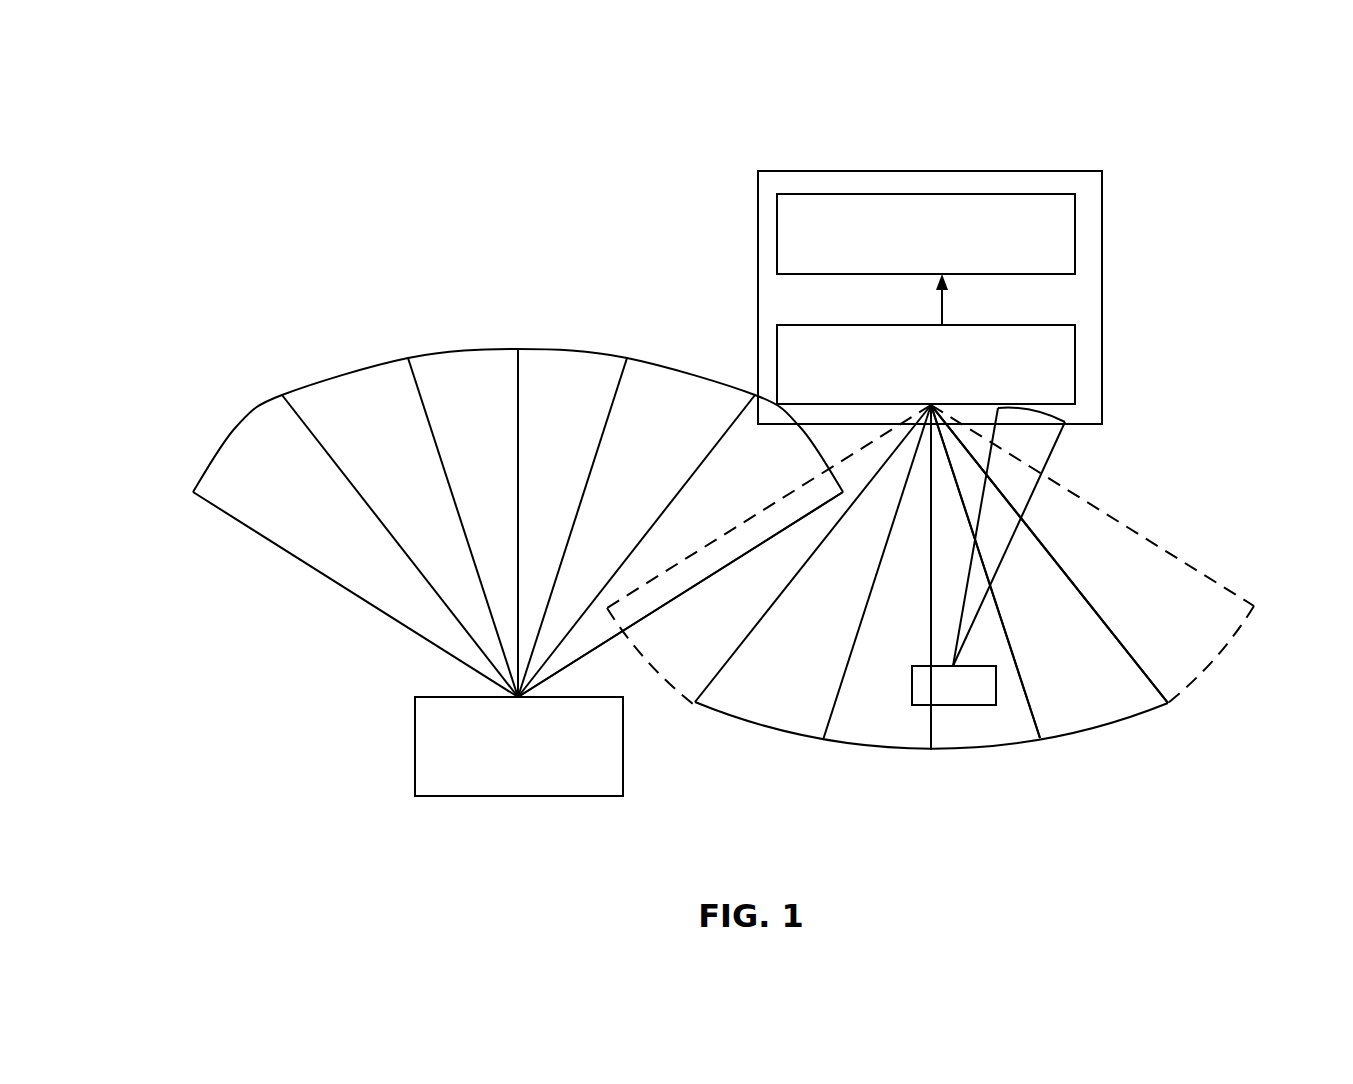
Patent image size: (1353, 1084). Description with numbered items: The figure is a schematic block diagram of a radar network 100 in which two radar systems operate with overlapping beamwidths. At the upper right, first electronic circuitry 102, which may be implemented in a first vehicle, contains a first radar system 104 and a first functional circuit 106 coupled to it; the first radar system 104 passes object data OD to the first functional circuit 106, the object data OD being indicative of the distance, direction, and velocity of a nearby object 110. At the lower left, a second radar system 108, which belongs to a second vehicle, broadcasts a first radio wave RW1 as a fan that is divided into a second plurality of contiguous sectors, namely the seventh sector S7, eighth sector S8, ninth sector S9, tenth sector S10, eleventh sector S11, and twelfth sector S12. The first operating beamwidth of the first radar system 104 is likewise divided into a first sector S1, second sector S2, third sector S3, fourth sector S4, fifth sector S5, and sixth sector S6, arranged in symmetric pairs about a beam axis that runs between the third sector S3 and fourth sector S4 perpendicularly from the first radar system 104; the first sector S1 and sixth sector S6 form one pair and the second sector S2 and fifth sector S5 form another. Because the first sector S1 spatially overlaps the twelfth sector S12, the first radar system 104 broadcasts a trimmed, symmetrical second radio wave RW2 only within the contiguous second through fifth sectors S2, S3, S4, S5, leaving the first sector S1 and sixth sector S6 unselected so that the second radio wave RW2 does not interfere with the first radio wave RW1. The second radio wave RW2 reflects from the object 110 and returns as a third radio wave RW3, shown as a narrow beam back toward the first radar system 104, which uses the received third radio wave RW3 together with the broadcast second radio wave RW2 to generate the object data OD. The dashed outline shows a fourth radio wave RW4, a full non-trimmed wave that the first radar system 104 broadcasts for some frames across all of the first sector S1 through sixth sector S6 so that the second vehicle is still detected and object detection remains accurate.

The radar network 100 is at (162, 125).
The first electronic circuitry 102 is at (1102, 297).
The first radar system 104 is at (926, 364).
The first functional circuit 106 is at (926, 234).
The second radar system 108 is at (519, 746).
The object 110 is at (950, 706).
The object data OD is at (922, 299).
The first radio wave RW1 is at (340, 585).
The second radio wave RW2 is at (1075, 737).
The third radio wave RW3 is at (1057, 452).
The fourth radio wave RW4 is at (1223, 667).
The first sector S1 is at (803, 572).
The second sector S2 is at (843, 577).
The third sector S3 is at (947, 571).
The fourth sector S4 is at (985, 572).
The fifth sector S5 is at (1049, 558).
The sixth sector S6 is at (1060, 554).
The seventh sector S7 is at (380, 546).
The eighth sector S8 is at (433, 527).
The ninth sector S9 is at (486, 523).
The tenth sector S10 is at (572, 527).
The eleventh sector S11 is at (636, 546).
The twelfth sector S12 is at (680, 571).